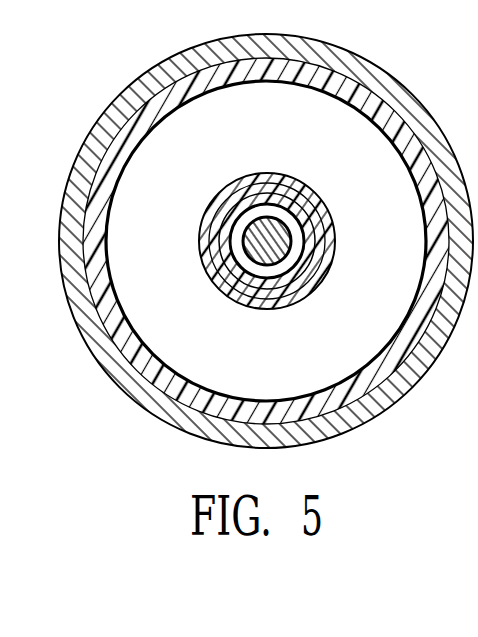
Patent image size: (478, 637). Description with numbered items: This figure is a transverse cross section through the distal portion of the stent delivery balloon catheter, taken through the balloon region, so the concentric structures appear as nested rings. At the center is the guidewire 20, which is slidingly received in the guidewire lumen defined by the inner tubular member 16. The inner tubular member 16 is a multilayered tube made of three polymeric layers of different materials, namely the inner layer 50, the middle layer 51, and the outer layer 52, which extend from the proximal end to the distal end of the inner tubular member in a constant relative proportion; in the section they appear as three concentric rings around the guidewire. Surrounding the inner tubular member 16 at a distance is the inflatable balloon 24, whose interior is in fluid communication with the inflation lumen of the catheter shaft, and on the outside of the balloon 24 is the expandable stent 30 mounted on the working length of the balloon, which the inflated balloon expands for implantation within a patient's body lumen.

The inner tubular member 16 is at (222, 192).
The guidewire 20 is at (282, 222).
The inflatable balloon 24 is at (138, 128).
The expandable stent 30 is at (405, 86).
The inner layer 50 is at (248, 278).
The middle layer 51 is at (222, 270).
The outer layer 52 is at (207, 248).